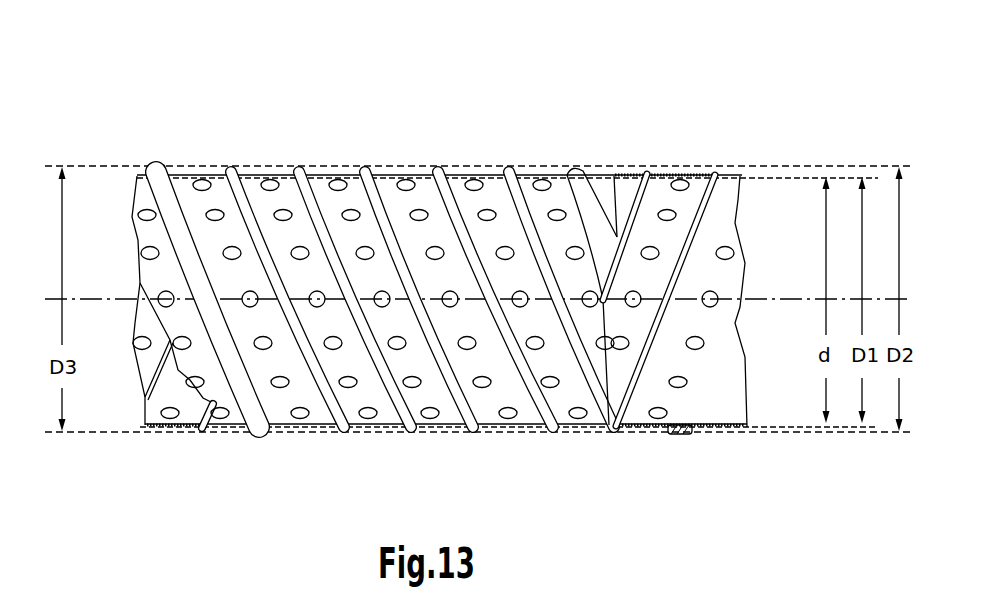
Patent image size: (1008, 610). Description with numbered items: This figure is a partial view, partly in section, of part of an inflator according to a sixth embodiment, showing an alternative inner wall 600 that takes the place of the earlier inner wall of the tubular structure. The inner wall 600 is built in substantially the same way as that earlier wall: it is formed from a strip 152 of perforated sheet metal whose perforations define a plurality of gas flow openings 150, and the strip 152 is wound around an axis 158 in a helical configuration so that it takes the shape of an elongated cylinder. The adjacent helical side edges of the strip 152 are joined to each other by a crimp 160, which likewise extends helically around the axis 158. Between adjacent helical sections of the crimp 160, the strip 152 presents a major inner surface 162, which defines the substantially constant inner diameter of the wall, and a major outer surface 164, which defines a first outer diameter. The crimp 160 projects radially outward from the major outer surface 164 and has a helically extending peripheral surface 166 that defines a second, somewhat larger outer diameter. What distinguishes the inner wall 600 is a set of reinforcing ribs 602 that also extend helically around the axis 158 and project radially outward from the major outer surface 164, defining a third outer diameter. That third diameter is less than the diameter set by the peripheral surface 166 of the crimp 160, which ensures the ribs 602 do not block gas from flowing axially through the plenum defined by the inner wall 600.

The inner wall 600 is at (464, 276).
The reinforcing ribs 602 is at (295, 170).
The peripheral surface 166 is at (360, 167).
The axis 158 is at (46, 297).
The gas flow openings 150 is at (348, 387).
The strip 152 is at (427, 436).
The crimp 160 is at (482, 438).
The major inner surface 162 is at (640, 424).
The major outer surface 164 is at (557, 397).